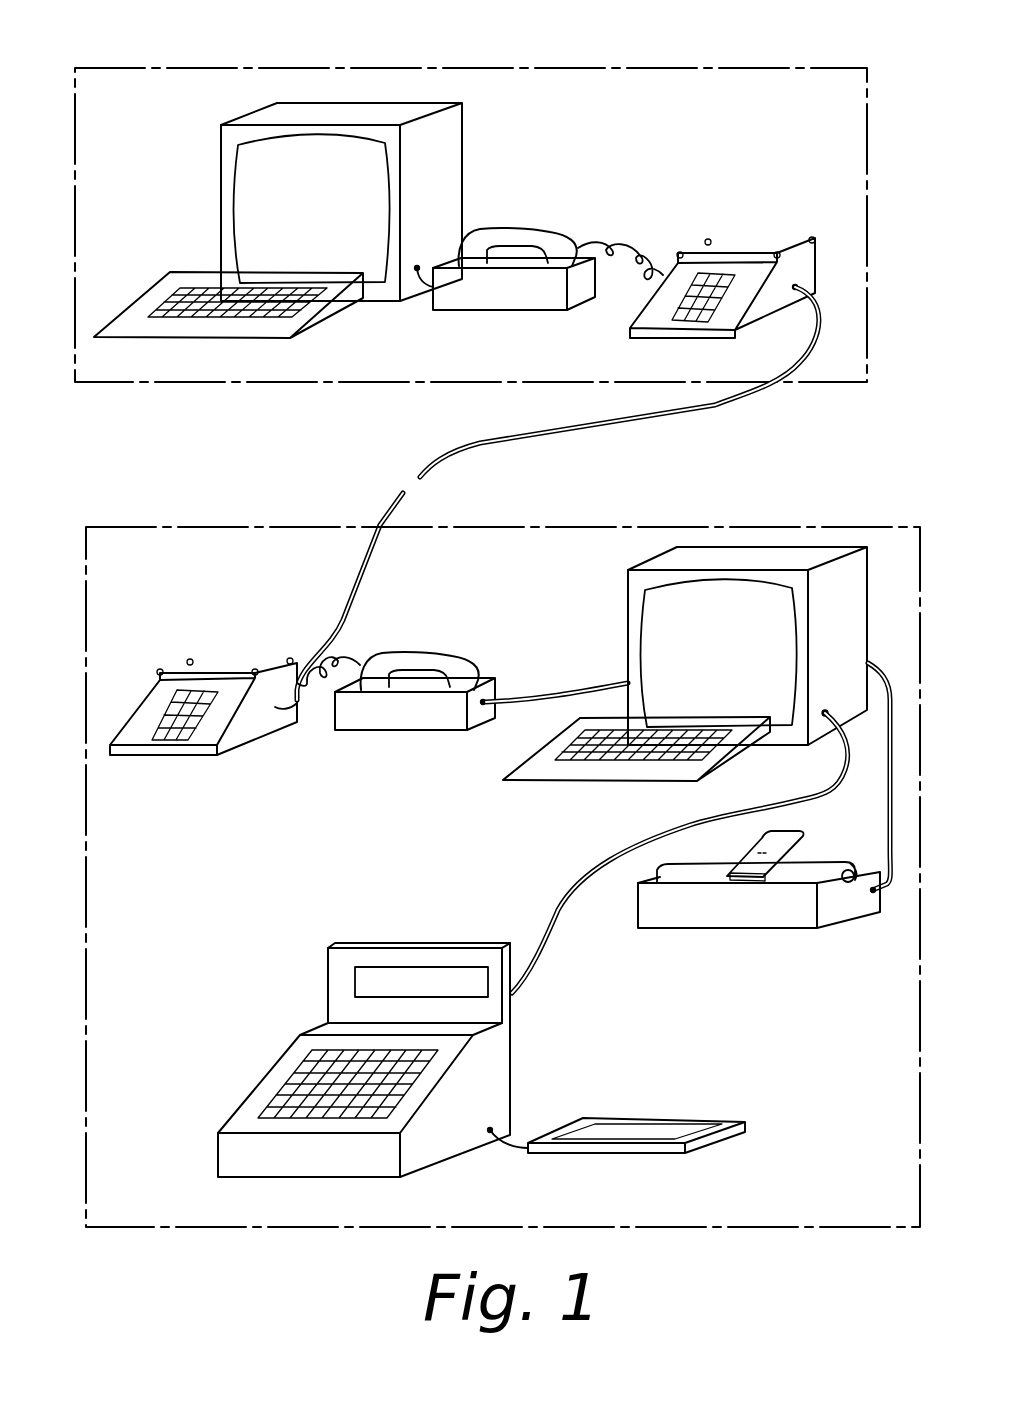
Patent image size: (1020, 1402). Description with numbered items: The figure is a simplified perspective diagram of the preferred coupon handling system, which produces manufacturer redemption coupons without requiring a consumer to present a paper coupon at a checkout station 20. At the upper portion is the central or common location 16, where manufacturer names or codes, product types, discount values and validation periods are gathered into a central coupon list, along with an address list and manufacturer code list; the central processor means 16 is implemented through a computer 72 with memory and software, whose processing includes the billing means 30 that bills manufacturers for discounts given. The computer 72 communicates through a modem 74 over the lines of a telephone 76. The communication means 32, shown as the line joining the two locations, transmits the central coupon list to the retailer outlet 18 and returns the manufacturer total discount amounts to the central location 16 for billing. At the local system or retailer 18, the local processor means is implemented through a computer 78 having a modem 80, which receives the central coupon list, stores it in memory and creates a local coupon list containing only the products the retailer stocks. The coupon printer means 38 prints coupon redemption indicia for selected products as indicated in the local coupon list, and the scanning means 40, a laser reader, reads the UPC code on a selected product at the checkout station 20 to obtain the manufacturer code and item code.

The central processor means 16 is at (550, 68).
The retailer outlet 18 is at (717, 525).
The checkout station 20 is at (383, 947).
The billing means 30 is at (765, 854).
The communication means 32 is at (632, 422).
The coupon printer means 38 is at (759, 916).
The scanning means 40 is at (743, 1123).
The computer 72 is at (450, 138).
The modem 74 is at (495, 235).
The telephone 76 is at (747, 253).
The computer 78 is at (637, 582).
The modem 80 is at (400, 708).